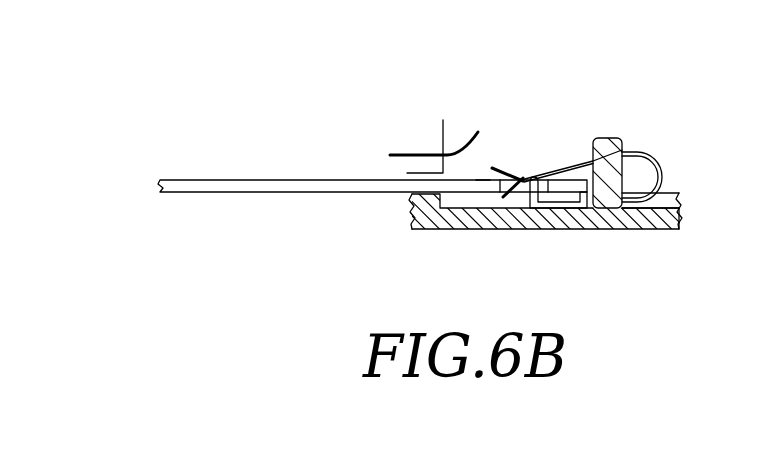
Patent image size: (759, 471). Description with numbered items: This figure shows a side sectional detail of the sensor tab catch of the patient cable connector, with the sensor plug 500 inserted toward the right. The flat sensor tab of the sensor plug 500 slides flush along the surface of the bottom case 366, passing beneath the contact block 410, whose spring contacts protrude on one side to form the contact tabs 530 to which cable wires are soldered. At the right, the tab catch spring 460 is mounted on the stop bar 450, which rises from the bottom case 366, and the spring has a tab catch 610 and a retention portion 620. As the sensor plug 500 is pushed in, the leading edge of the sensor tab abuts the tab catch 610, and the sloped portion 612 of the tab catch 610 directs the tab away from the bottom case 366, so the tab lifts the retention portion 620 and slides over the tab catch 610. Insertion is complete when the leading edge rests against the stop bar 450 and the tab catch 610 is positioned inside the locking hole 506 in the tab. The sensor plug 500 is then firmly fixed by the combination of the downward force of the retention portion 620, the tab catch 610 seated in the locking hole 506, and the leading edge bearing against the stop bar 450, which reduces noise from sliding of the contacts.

The sensor plug 500 is at (233, 178).
The contact block 410 is at (440, 127).
The contact tabs 530 is at (470, 135).
The locking hole 506 is at (480, 178).
The retention portion 620 is at (530, 177).
The tab catch 610 is at (553, 176).
The stop bar 450 is at (612, 138).
The tab catch spring 460 is at (650, 152).
The sloped portion 612 is at (517, 186).
The bottom case 366 is at (640, 223).